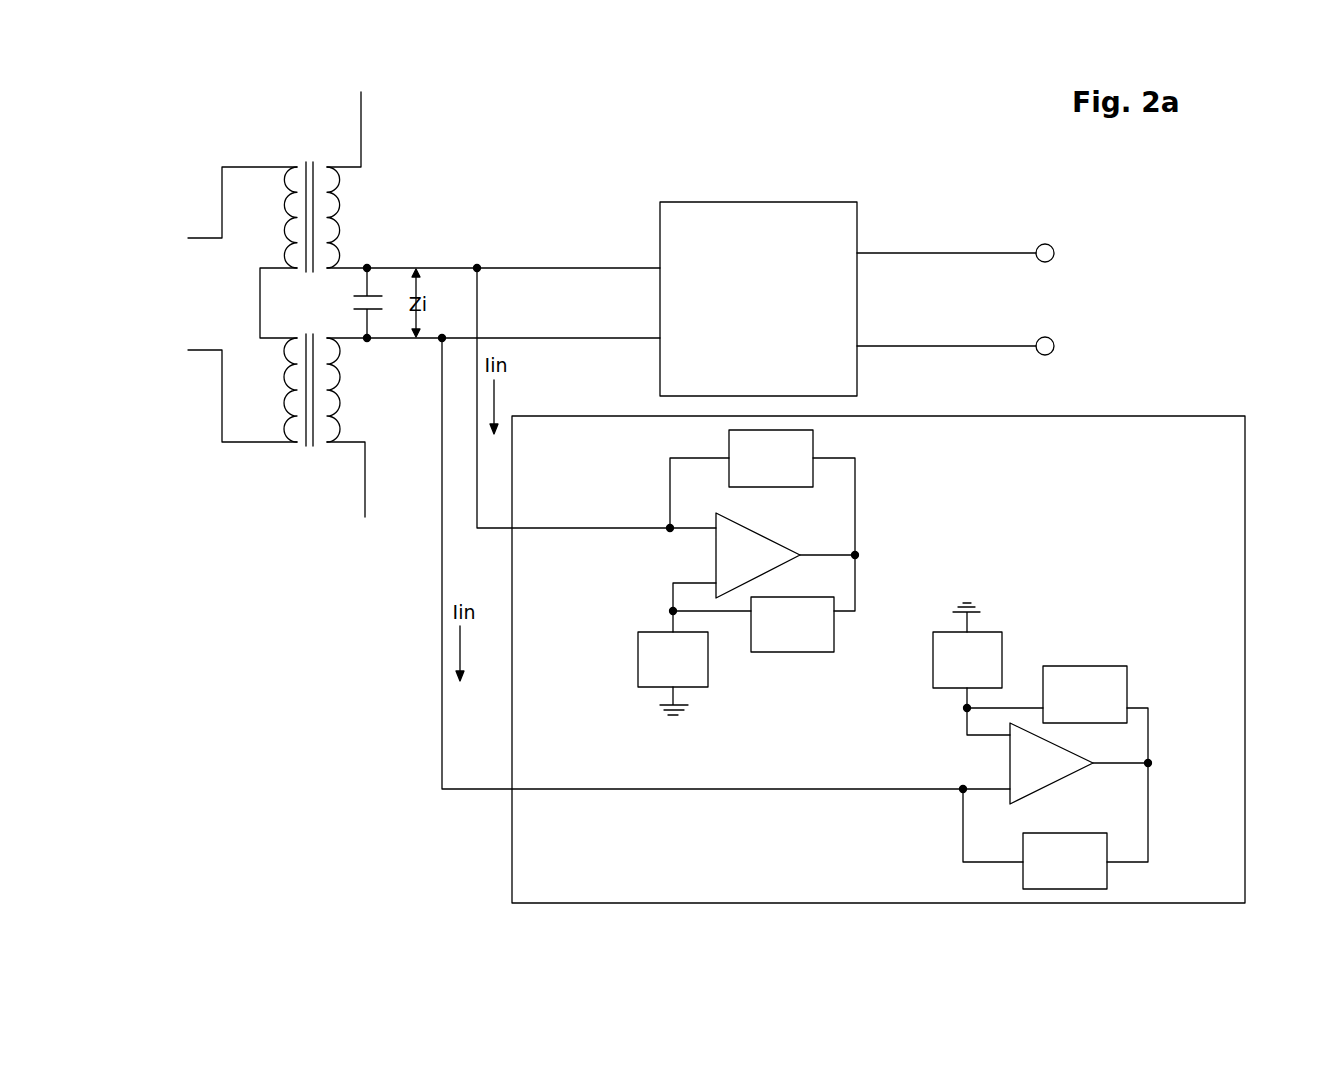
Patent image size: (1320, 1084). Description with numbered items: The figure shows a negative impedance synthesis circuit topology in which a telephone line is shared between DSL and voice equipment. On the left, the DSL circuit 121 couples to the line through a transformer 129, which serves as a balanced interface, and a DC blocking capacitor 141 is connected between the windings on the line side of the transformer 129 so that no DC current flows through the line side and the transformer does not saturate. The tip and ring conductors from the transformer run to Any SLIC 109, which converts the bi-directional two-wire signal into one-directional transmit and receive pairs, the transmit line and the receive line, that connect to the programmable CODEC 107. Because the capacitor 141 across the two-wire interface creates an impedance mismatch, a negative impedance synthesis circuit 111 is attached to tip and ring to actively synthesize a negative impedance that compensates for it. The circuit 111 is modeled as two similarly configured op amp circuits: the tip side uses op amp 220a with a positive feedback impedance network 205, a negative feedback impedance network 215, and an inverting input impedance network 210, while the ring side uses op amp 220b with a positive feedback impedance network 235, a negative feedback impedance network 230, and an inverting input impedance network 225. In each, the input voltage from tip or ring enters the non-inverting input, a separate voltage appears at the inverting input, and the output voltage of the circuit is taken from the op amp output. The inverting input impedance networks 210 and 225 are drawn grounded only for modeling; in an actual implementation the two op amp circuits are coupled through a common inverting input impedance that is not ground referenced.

The transformer 129 is at (287, 306).
The DSL circuit 121 is at (181, 297).
The DC blocking capacitor 141 is at (343, 303).
The SLIC 109 is at (758, 299).
The programmable CODEC 107 is at (1033, 291).
The negative impedance synthesis module 111 is at (878, 659).
The Z1 impedance 205 is at (762, 492).
The Z2 impedance 215 is at (764, 603).
The Z3 impedance 210 is at (673, 663).
The op amp 220a is at (786, 556).
The Z3 impedance 225 is at (967, 655).
The Z2 impedance 230 is at (1057, 714).
The Z1 impedance 235 is at (1055, 826).
The op amp 220b is at (1080, 769).